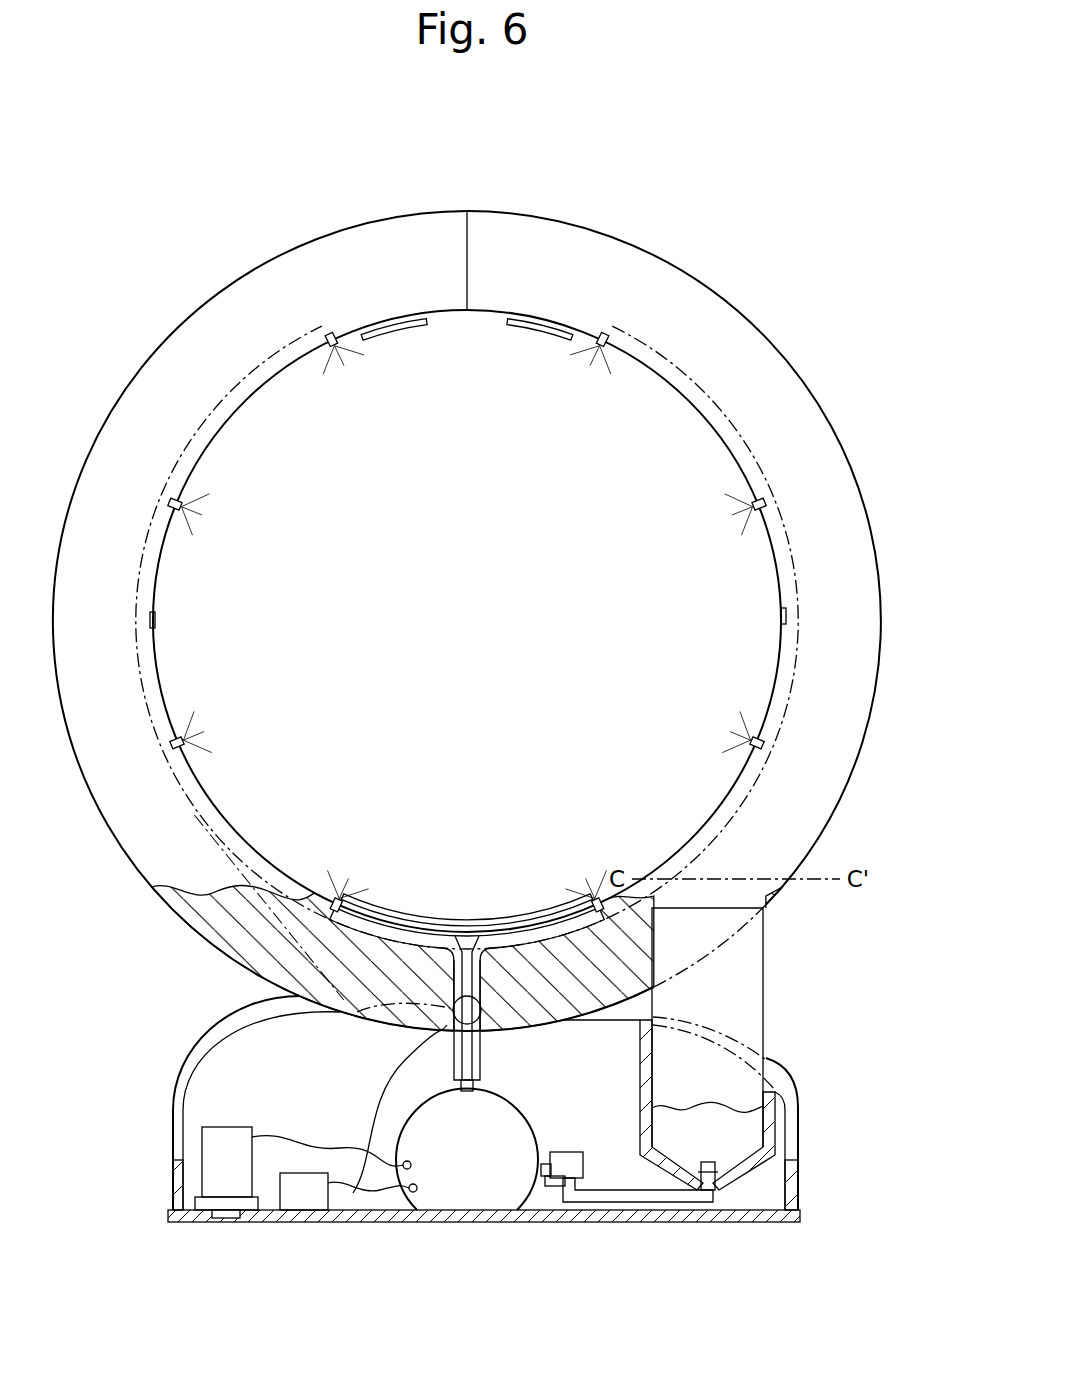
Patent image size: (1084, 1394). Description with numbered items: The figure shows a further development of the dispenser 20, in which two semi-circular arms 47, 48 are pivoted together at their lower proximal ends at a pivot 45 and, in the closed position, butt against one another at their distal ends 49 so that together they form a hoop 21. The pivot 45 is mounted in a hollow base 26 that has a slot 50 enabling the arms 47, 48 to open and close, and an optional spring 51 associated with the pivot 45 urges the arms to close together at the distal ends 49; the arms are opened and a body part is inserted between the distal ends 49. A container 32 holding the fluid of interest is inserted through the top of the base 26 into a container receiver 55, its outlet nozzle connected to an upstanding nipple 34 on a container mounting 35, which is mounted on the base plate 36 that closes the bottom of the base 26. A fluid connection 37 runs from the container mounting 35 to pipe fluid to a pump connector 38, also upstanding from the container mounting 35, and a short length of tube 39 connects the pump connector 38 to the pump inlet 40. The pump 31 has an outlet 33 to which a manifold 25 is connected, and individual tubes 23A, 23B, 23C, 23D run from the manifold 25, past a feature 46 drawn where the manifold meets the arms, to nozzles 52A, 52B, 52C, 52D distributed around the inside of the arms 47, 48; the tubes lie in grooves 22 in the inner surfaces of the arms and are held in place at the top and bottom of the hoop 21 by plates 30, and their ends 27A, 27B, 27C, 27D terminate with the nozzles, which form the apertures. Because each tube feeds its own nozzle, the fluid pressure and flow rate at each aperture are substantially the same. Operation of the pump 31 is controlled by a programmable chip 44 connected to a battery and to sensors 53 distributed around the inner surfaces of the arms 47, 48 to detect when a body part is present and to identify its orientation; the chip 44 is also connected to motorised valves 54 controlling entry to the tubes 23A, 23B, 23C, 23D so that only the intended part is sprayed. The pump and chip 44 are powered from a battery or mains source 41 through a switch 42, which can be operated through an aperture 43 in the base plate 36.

The dispenser 20 is at (742, 295).
The hoop 21 is at (820, 428).
The grooves 22 is at (788, 692).
The tube 23A is at (486, 925).
The tube 23B is at (208, 805).
The tube 23C is at (775, 560).
The tube 23D is at (254, 378).
The manifold 25 is at (470, 1058).
The base 26 is at (794, 1196).
The end of tube 27A is at (603, 904).
The end of tube 27B is at (762, 742).
The end of tube 27C is at (755, 490).
The end of tube 27D is at (597, 330).
The plates 30 is at (400, 326).
The pump 31 is at (440, 1170).
The container 32 is at (740, 992).
The outlet 33 is at (474, 1086).
The nipple 34 is at (710, 1203).
The container mounting 35 is at (667, 1223).
The base plate 36 is at (356, 1222).
The fluid connection 37 is at (628, 1204).
The pump connector 38 is at (569, 1203).
The tube 39 is at (570, 1152).
The pump inlet 40 is at (556, 1188).
The battery or mains source 41 is at (215, 1140).
The switch 42 is at (227, 1219).
The aperture 43 is at (203, 1216).
The programmable chip 44 is at (300, 1212).
The pivot 45 is at (360, 1016).
The inlet 46 is at (465, 934).
The semi-circular arm 47 is at (142, 836).
The semi-circular arm 48 is at (838, 629).
The distal ends 49 is at (452, 222).
The slot 50 is at (186, 1085).
The spring 51 is at (484, 1012).
The nozzle 52A is at (338, 898).
The nozzle 52B is at (186, 738).
The nozzle 52C is at (184, 510).
The nozzle 52D is at (336, 350).
The sensor 53 is at (237, 410).
The motorised valves 54 is at (450, 1027).
The container receiver 55 is at (775, 1086).